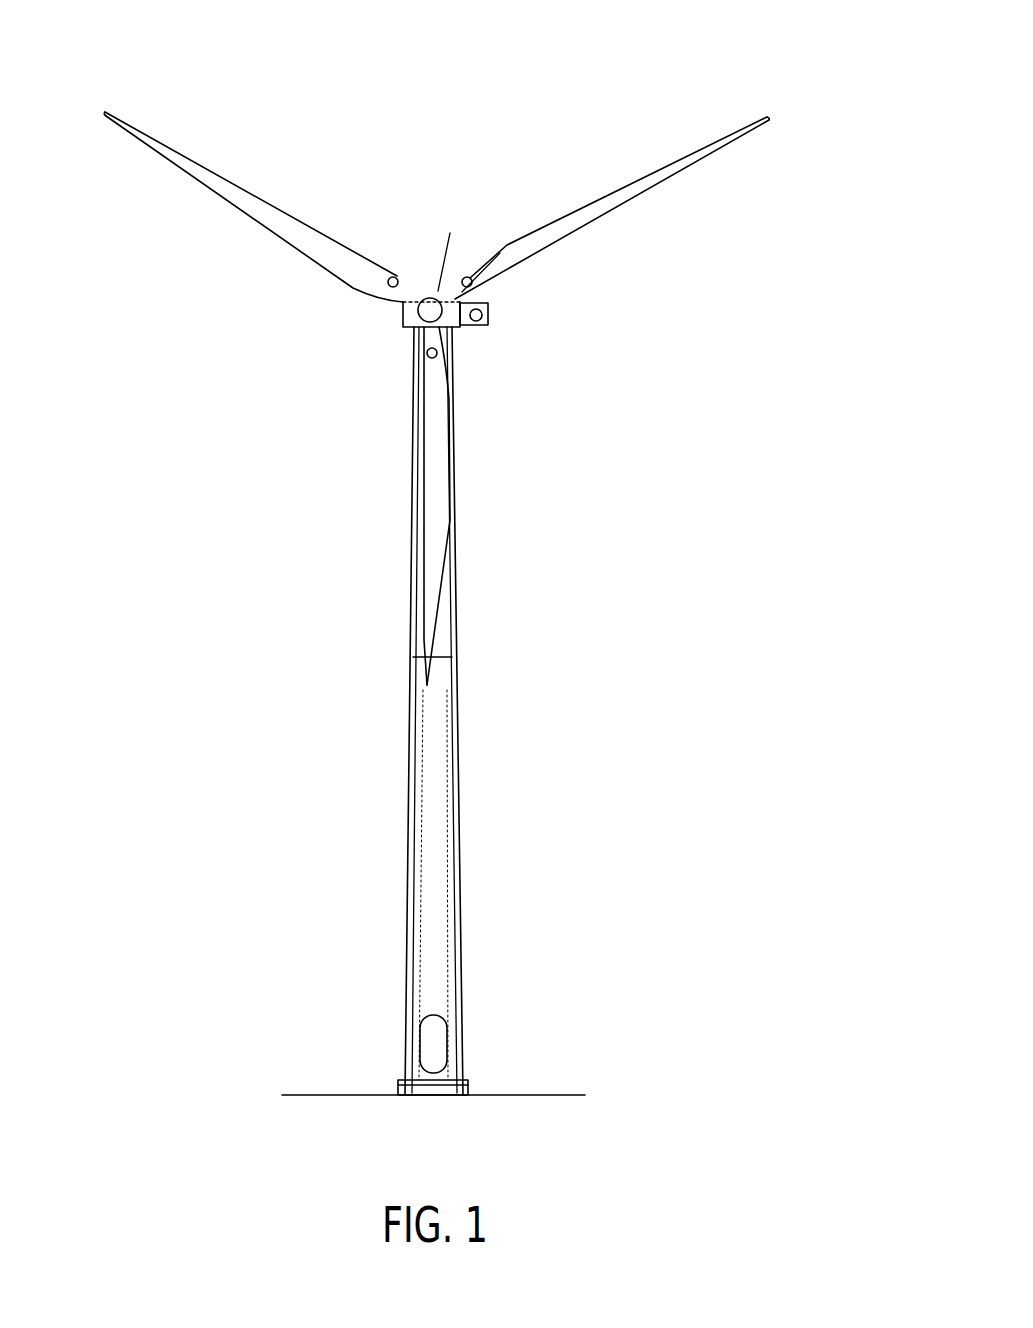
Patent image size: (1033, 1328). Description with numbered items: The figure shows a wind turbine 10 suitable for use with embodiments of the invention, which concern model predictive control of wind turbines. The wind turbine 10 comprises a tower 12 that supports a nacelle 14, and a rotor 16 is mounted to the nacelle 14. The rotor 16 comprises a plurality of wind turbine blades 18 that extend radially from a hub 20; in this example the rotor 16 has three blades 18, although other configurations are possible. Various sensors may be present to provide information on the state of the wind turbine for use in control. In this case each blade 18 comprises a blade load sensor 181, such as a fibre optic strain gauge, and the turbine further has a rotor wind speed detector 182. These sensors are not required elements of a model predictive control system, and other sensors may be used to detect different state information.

The wind turbine 10 is at (656, 101).
The tower 12 is at (443, 757).
The nacelle 14 is at (490, 328).
The rotor 16 is at (380, 335).
The wind turbine blades 18 is at (333, 243).
The hub 20 is at (433, 283).
The blade load sensor 181 is at (398, 278).
The rotor wind speed detector 182 is at (490, 313).